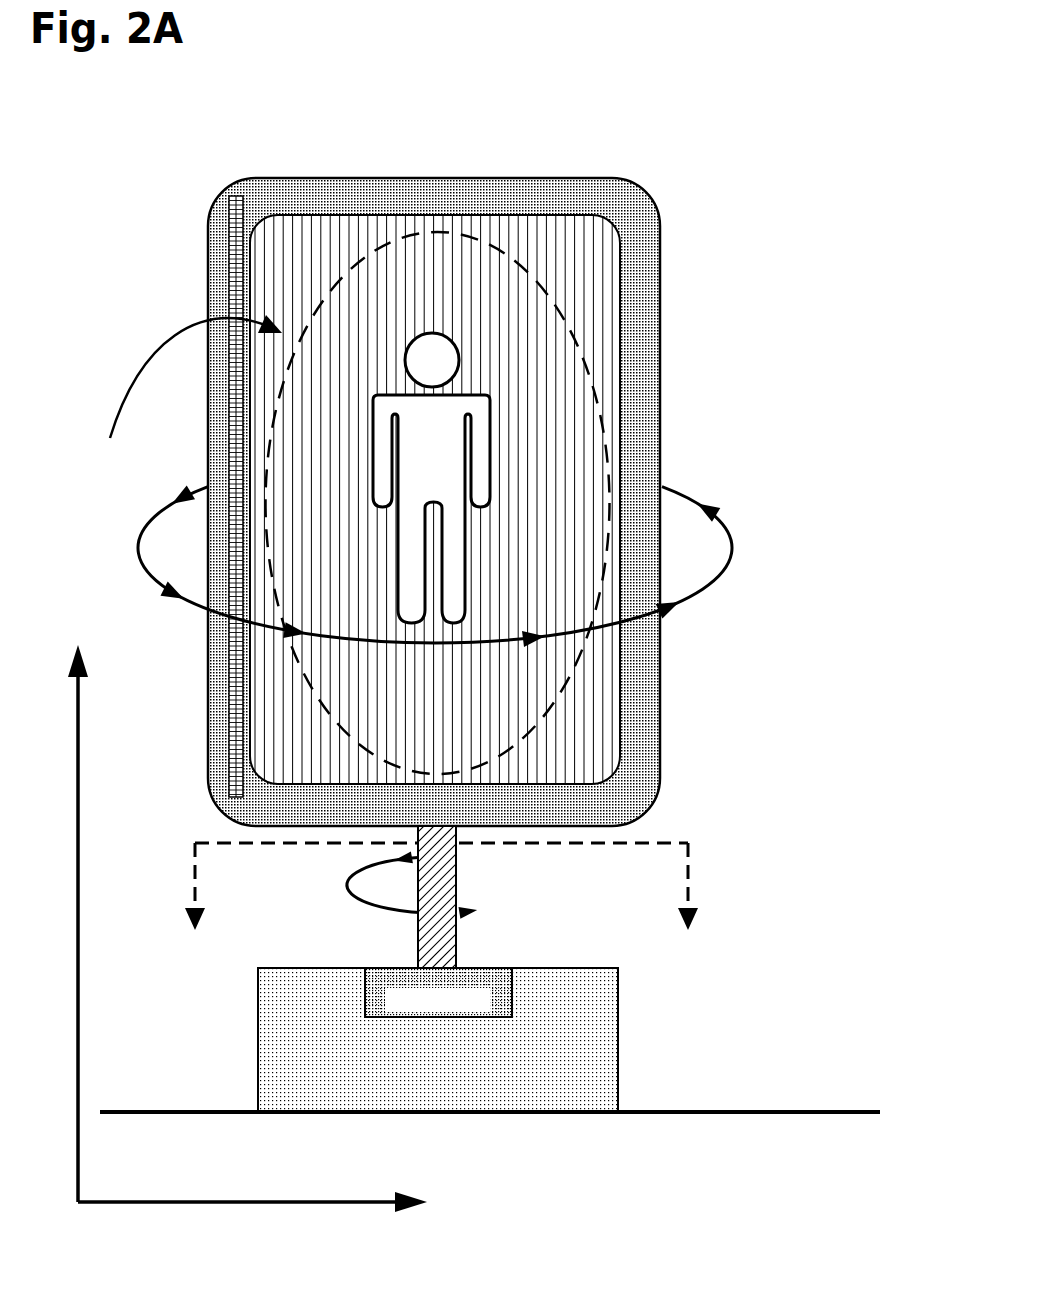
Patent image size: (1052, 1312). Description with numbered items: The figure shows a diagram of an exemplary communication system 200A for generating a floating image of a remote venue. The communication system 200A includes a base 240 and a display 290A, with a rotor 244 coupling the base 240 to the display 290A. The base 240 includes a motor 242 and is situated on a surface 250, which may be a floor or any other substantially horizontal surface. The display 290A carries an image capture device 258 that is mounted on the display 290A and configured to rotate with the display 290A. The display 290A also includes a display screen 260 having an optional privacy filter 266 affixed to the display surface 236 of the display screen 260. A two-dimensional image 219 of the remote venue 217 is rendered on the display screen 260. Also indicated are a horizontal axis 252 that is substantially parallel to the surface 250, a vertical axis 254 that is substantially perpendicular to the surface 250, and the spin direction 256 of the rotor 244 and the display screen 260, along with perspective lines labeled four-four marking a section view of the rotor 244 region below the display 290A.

The communication system 200A is at (848, 65).
The display 290A is at (686, 170).
The display screen 260 is at (585, 178).
The privacy filter 266 is at (435, 500).
The image capture device 258 is at (227, 293).
The two-dimensional image 219 is at (591, 334).
The remote venue 217 is at (588, 382).
The display surface 236 is at (181, 395).
The spin direction 256 is at (720, 582).
The rotor 244 is at (418, 952).
The motor 242 is at (438, 992).
The base 240 is at (618, 1016).
The surface 250 is at (805, 1112).
The vertical axis 254 is at (77, 843).
The horizontal axis 252 is at (245, 1200).